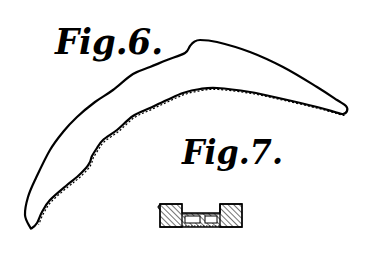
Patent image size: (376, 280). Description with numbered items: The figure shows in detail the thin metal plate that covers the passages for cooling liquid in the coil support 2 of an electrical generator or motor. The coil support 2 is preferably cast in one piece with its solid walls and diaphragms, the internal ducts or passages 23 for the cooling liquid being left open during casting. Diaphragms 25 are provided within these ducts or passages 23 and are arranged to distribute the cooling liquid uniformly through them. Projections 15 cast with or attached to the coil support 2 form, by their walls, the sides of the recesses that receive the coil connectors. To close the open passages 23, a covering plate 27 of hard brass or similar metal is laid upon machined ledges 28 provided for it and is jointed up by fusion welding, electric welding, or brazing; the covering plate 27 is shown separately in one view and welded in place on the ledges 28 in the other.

In FIG. 7, the coil support 2 is at (211, 221).
In FIG. 7, the projections 15 is at (172, 206).
In FIG. 7, the internal ducts or passages 23 is at (190, 223).
In FIG. 7, the diaphragms 25 is at (201, 228).
In FIG. 6, the covering plates 27 is at (192, 146).
In FIG. 7, the covering plates 27 is at (188, 214).
In FIG. 7, the machined ledges 28 is at (220, 207).